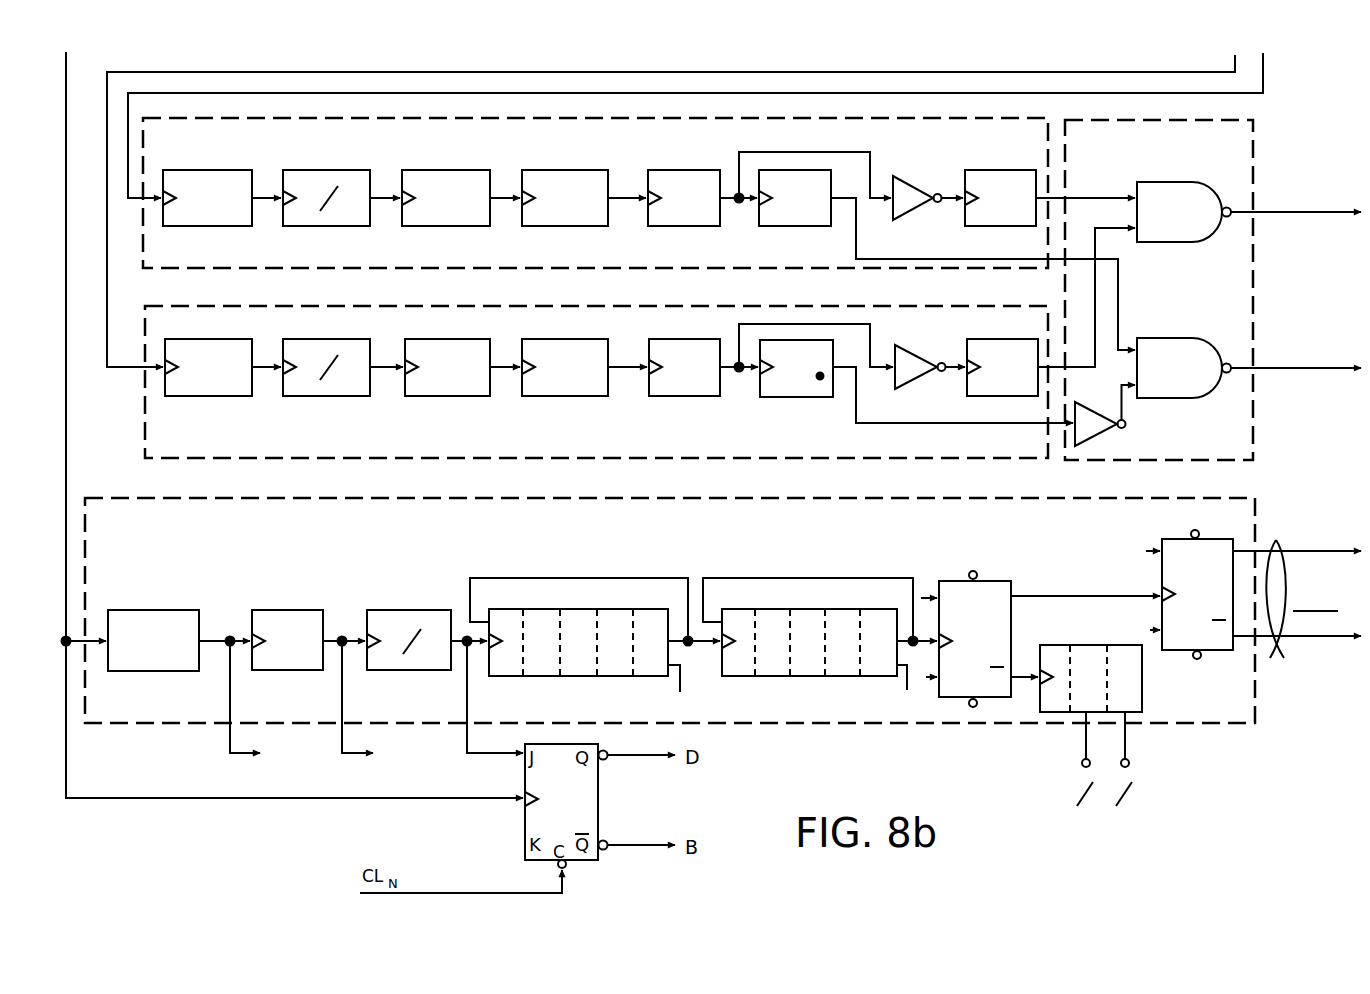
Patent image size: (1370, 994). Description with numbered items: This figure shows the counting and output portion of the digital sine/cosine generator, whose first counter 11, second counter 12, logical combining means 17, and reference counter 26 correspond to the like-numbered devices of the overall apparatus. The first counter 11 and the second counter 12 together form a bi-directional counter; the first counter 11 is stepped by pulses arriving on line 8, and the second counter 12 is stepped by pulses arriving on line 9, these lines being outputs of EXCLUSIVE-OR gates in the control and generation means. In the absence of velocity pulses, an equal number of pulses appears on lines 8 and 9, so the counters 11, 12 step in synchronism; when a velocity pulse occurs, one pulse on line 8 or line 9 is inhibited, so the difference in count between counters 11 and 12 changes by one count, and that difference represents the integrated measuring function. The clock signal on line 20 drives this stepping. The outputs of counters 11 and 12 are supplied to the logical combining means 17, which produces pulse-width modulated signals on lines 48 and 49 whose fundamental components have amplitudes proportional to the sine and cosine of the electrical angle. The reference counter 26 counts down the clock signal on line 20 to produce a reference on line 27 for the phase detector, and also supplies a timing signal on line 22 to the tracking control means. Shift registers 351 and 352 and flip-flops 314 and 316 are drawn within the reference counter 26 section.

The clock signal line 20 is at (66, 68).
The input line to first counter 8 is at (1263, 61).
The input line to second counter 9 is at (1232, 64).
The first counter 11 is at (407, 119).
The second counter 12 is at (425, 306).
The logical combining means 17 is at (1255, 294).
The sine output line 48 is at (1268, 212).
The cosine output line 49 is at (1318, 372).
The reference counter 26 is at (890, 725).
The timing signal line 22 is at (343, 710).
The shift register 351 is at (532, 608).
The shift register 352 is at (763, 608).
The JK flip-flop 314 is at (998, 581).
The JK flip-flop 316 is at (1186, 536).
The reference line 27 is at (1285, 577).